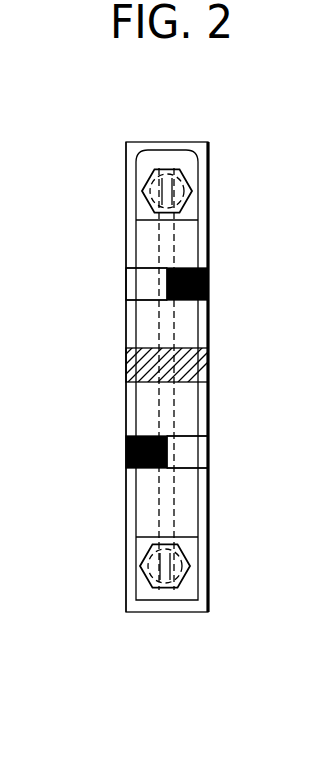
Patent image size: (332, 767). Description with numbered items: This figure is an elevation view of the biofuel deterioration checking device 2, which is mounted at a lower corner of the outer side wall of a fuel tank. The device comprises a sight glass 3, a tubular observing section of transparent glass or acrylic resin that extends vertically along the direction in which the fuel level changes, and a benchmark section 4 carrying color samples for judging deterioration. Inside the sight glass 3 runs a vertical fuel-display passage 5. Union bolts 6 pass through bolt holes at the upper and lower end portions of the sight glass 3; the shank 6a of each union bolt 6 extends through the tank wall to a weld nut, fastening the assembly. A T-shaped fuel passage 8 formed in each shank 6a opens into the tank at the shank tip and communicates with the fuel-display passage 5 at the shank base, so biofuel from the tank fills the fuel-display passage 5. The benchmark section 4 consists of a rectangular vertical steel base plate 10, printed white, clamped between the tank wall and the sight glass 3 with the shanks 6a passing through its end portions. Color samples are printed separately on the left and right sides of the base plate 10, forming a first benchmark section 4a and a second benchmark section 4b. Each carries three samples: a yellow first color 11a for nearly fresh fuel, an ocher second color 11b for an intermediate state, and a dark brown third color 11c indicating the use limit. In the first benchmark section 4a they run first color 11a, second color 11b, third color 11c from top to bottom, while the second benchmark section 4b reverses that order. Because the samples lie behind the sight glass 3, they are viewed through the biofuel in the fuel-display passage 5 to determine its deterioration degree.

The deterioration checking device 2 is at (240, 142).
The sight glass 3 is at (180, 162).
The benchmark section 4 is at (212, 160).
The first benchmark section 4a is at (100, 262).
The second benchmark section 4b is at (231, 262).
The fuel-display passage 5 is at (172, 329).
The union bolt 6 is at (186, 181).
The shank 6a is at (197, 205).
The T-shaped fuel passage 8 is at (166, 172).
The base plate 10 is at (129, 153).
The first color 11a is at (130, 284).
The second color 11b is at (130, 362).
The third color 11c is at (210, 284).